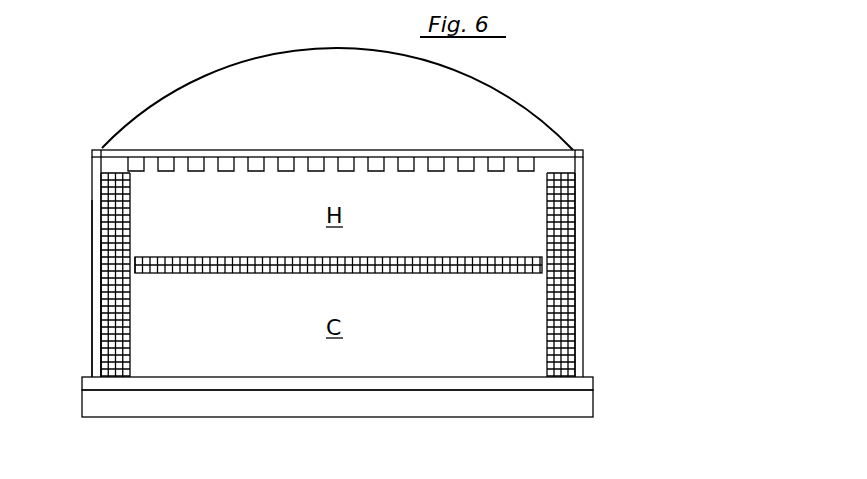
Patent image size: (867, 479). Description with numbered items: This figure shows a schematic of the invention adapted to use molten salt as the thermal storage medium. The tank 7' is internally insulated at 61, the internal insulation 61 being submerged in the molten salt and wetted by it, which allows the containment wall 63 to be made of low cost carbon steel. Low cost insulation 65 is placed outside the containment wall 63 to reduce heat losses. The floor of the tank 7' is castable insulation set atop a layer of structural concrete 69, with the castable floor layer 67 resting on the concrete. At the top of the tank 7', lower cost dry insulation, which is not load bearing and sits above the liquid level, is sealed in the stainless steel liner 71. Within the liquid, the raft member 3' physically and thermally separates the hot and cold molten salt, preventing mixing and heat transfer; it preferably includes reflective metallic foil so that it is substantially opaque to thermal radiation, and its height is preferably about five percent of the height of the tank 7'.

The tank 7' is at (337, 99).
The stainless steel liner 71 is at (435, 165).
The raft member 3' is at (338, 245).
The internal insulation 61 is at (115, 224).
The containment wall 63 is at (100, 255).
The insulation 65 is at (92, 305).
The base plate 67 is at (82, 384).
The structural concrete 69 is at (82, 404).